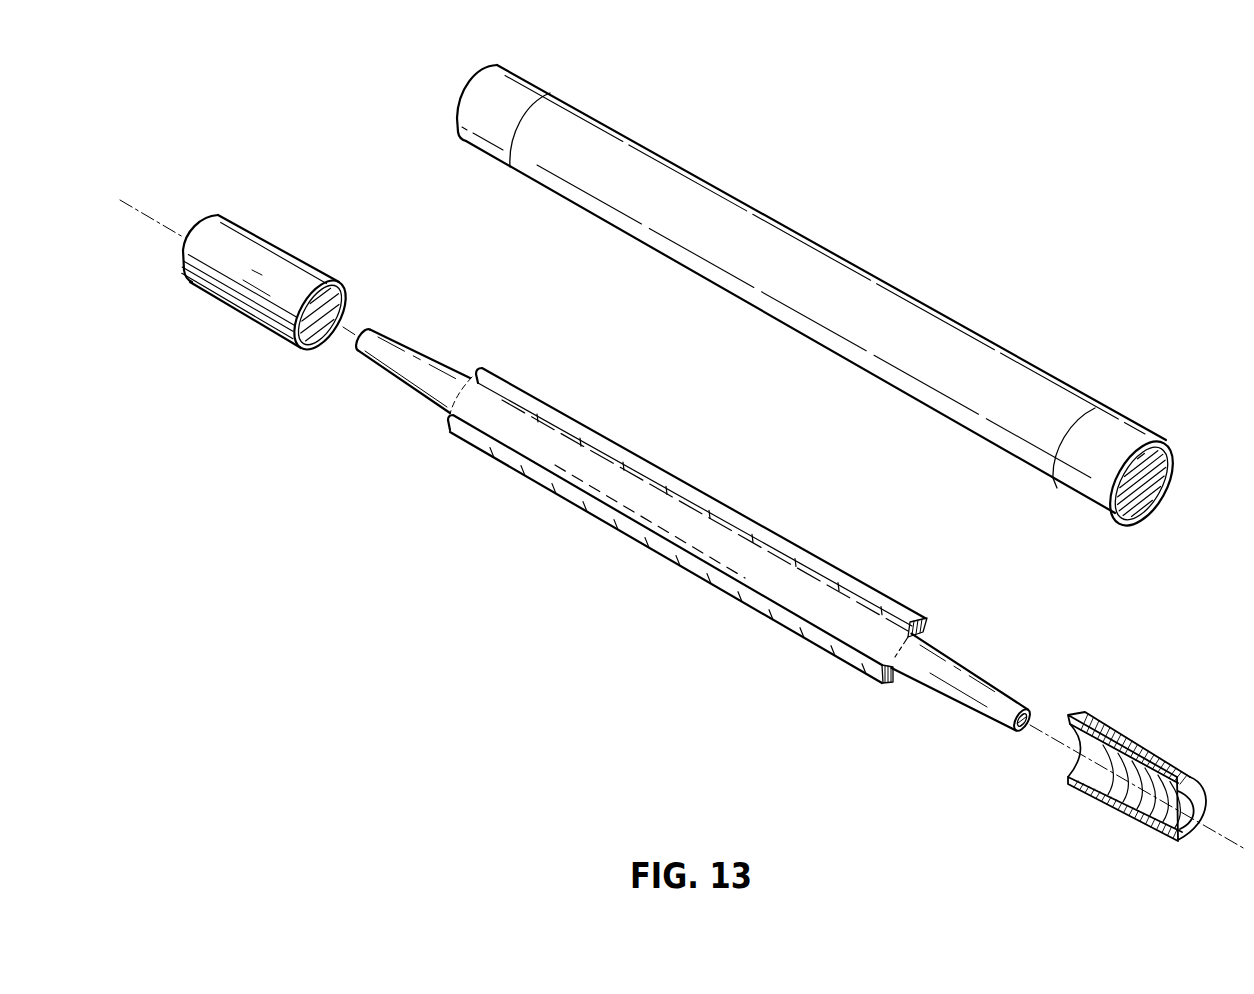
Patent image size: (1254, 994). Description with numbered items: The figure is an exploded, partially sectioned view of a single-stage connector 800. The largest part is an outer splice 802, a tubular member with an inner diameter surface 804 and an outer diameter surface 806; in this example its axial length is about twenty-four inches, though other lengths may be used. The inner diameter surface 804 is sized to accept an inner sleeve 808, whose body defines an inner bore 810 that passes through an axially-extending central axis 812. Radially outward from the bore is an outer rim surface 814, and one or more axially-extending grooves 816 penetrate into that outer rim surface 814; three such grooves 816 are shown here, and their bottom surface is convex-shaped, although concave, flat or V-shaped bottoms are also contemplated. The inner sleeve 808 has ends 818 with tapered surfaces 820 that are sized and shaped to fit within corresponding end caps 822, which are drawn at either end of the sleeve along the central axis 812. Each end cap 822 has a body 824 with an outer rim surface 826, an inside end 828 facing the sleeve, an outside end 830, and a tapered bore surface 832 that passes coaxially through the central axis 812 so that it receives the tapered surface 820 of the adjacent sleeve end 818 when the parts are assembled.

The single-stage connector 800 is at (674, 462).
The outer splice 802 is at (840, 324).
The inner diameter surface 804 is at (1147, 497).
The outer diameter surface 806 is at (630, 150).
The inner sleeve 808 is at (691, 532).
The inner bore 810 is at (1025, 728).
The central axis 812 is at (132, 203).
The outer rim surface 814 is at (910, 620).
The axially-extending grooves 816 is at (560, 450).
The ends 818 is at (433, 380).
The tapered surfaces 820 is at (453, 368).
The end caps 822 is at (654, 530).
The body 824 is at (270, 273).
The outer rim surface 826 is at (313, 263).
The inside end 828 is at (305, 350).
The outside end 830 is at (182, 250).
The tapered bore surface 832 is at (1175, 818).